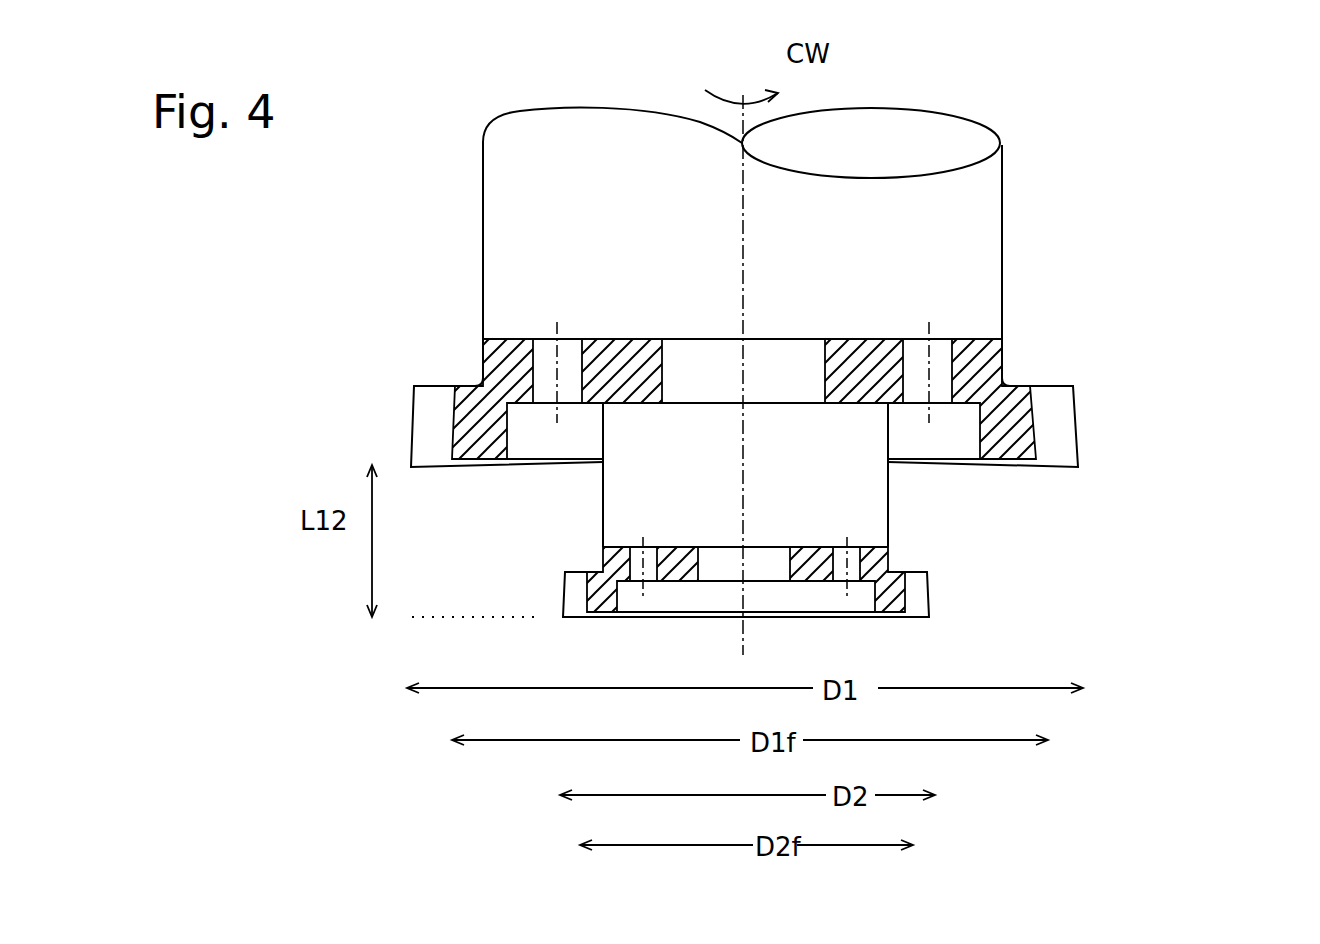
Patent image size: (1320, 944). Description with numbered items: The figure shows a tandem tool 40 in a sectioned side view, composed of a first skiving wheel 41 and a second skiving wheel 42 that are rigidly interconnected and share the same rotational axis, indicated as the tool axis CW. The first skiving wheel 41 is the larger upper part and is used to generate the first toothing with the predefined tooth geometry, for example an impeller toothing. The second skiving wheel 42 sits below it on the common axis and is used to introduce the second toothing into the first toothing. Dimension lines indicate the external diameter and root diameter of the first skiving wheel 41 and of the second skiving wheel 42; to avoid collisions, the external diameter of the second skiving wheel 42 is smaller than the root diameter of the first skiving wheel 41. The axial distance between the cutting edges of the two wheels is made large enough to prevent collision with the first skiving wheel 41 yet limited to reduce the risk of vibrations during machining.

The tandem tool 40 is at (1166, 185).
The first skiving wheel 41 is at (1113, 430).
The second skiving wheel 42 is at (958, 598).